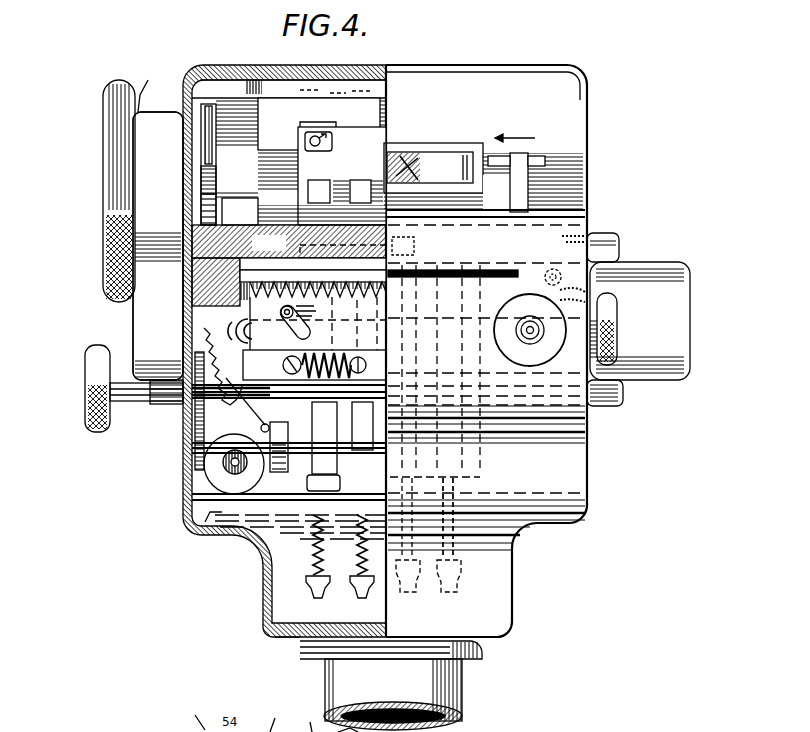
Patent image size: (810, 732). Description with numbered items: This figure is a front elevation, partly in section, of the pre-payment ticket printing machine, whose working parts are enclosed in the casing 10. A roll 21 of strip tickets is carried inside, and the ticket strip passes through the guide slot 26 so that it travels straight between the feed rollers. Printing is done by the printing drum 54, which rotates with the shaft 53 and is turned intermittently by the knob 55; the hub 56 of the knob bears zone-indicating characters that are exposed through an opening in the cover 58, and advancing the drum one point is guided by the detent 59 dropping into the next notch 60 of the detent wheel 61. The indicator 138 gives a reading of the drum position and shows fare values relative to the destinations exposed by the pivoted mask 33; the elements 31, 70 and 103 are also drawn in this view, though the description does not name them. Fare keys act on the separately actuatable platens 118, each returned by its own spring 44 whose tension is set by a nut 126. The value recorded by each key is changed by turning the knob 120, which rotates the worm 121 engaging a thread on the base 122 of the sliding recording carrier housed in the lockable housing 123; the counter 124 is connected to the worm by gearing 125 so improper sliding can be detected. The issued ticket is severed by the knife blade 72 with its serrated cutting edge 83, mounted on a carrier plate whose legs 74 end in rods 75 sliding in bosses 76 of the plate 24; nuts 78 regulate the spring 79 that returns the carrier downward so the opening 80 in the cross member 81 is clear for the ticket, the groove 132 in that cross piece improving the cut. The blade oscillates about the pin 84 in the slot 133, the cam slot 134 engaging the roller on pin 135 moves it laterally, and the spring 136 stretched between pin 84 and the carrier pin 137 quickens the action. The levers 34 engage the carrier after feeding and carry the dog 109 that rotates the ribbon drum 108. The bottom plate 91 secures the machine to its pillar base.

The casing 10 is at (183, 465).
The roll 21 is at (322, 161).
The plate 24 is at (206, 522).
The guide slot 26 is at (368, 596).
The knob 31 is at (612, 317).
The pivoted mask 33 is at (518, 212).
The levers 34 is at (281, 474).
The spring 44 is at (394, 590).
The shaft 53 is at (248, 182).
The printing drum 54 is at (356, 134).
The knob 55 is at (116, 298).
The hub 56 is at (147, 86).
The cover 58 is at (152, 116).
The detent 59 is at (205, 148).
The notch 60 is at (205, 193).
The detent wheel 61 is at (203, 178).
The disc 70 is at (507, 355).
The knife blade 72 is at (368, 312).
The legs 74 is at (324, 438).
The rods 75 is at (306, 520).
The bosses 76 is at (306, 484).
The nuts 78 is at (325, 596).
The spring 79 is at (313, 565).
The opening 80 is at (394, 270).
The cross member 81 is at (192, 298).
The cutting edge 83 is at (382, 291).
The pin 84 is at (283, 365).
The bottom plate 91 is at (278, 640).
The cover 103 is at (386, 93).
The ribbon drum 108 is at (230, 330).
The dog 109 is at (243, 418).
The platens 118 is at (467, 310).
The knob 120 is at (90, 432).
The worm 121 is at (142, 404).
The base 122 is at (480, 382).
The housing 123 is at (133, 330).
The counter 124 is at (210, 476).
The gearing 125 is at (195, 443).
The nut 126 is at (447, 545).
The groove 132 is at (268, 258).
The slot 133 is at (314, 365).
The cam slot 134 is at (296, 322).
The pin 135 is at (285, 306).
The spring 136 is at (348, 358).
The pin 137 is at (364, 368).
The indicator 138 is at (455, 165).